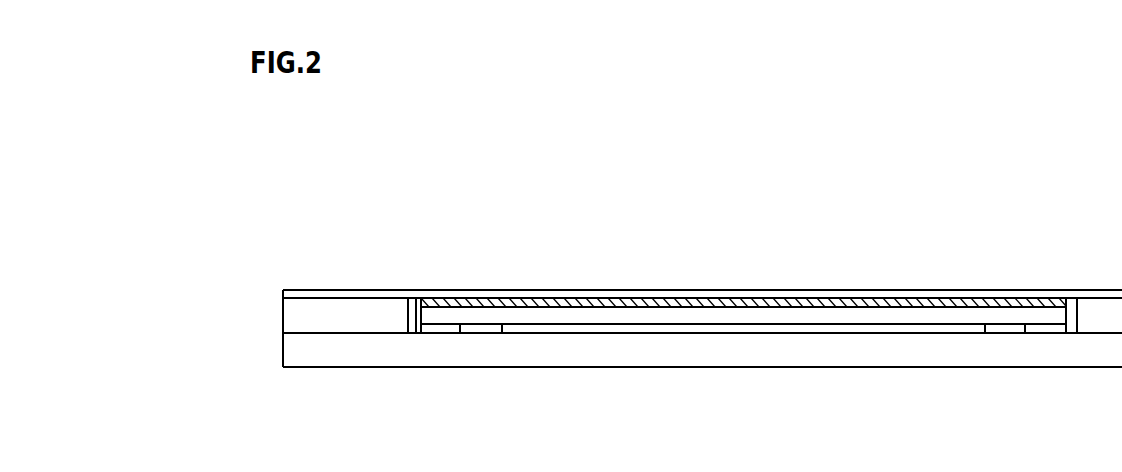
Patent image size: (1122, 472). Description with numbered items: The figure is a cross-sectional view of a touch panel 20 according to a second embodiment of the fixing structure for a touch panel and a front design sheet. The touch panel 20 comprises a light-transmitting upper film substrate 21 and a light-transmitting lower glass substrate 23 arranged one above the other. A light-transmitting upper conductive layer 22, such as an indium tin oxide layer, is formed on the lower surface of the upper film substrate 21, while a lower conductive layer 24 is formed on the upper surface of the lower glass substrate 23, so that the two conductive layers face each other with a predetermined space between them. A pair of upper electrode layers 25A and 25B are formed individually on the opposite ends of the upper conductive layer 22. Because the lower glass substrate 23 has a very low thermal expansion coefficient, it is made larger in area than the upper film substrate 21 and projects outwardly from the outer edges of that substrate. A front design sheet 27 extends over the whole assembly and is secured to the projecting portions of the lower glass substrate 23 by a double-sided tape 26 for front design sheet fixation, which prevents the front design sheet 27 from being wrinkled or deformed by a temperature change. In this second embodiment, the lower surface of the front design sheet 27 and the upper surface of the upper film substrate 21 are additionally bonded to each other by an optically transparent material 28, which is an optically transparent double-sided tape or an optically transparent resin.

The touch panel 20 is at (765, 108).
The upper film substrate 21 is at (500, 312).
The upper conductive layer 22 is at (816, 323).
The lower glass substrate 23 is at (568, 352).
The lower conductive layer 24 is at (830, 333).
The upper electrode layer 25A is at (437, 330).
The upper electrode layer 25B is at (1042, 330).
The double-sided tape for front design sheet fixation 26 is at (322, 313).
The front design sheet 27 is at (971, 290).
The optically transparent material 28 is at (722, 302).